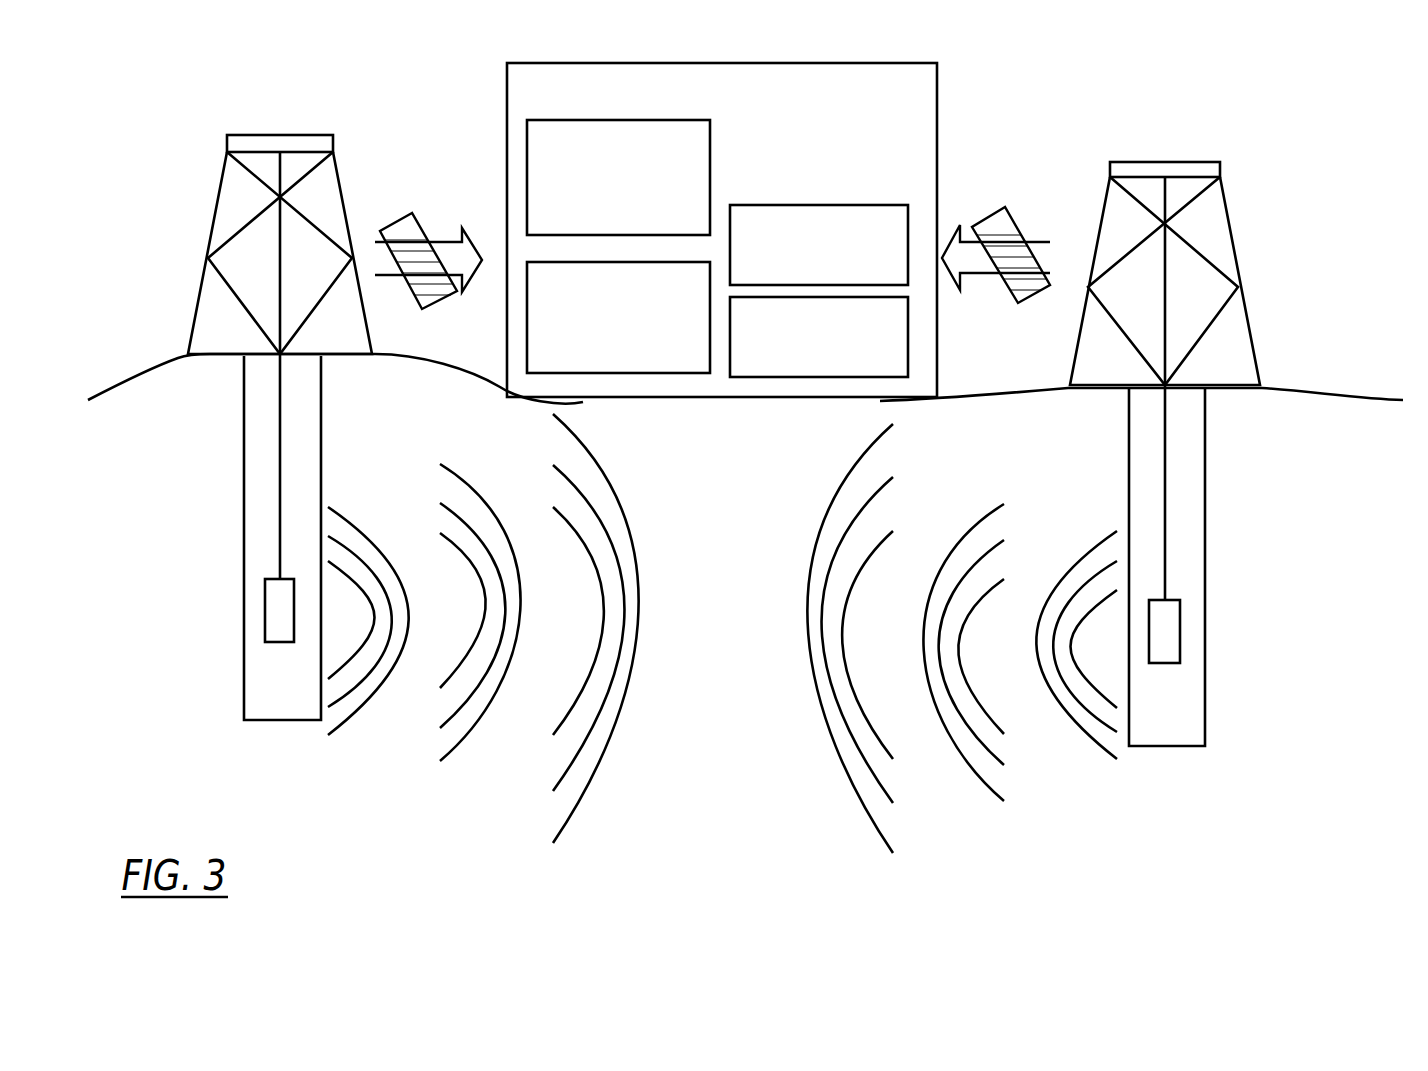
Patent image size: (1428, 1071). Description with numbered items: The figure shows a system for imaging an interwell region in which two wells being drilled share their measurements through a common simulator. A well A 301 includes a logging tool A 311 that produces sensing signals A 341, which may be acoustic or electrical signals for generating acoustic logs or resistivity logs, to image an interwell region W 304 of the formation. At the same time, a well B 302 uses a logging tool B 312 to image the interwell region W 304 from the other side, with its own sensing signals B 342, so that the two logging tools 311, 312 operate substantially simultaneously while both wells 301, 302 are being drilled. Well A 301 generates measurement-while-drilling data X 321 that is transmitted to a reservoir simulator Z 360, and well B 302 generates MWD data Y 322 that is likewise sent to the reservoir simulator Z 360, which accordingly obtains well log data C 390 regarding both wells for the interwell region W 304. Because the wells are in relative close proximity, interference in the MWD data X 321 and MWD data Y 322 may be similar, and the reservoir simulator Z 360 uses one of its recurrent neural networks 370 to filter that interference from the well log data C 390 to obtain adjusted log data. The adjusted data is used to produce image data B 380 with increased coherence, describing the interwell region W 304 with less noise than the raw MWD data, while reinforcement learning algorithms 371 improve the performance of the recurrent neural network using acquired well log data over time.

The well A 301 is at (222, 113).
The well B 302 is at (1296, 161).
The interwell region W 304 is at (715, 886).
The logging tool A 311 is at (258, 596).
The logging tool B 312 is at (1195, 623).
The measurement-while-drilling (MWD) data X 321 is at (441, 227).
The MWD data Y 322 is at (1039, 221).
The sensing signals A 341 is at (476, 756).
The Sensing Signals B 342 is at (1003, 815).
The reservoir simulator Z 360 is at (816, 96).
The recurrent neural networks 370 is at (653, 361).
The reinforcement learning algorithms 371 is at (655, 221).
The image data B 380 is at (802, 362).
The well log data C 390 is at (815, 272).